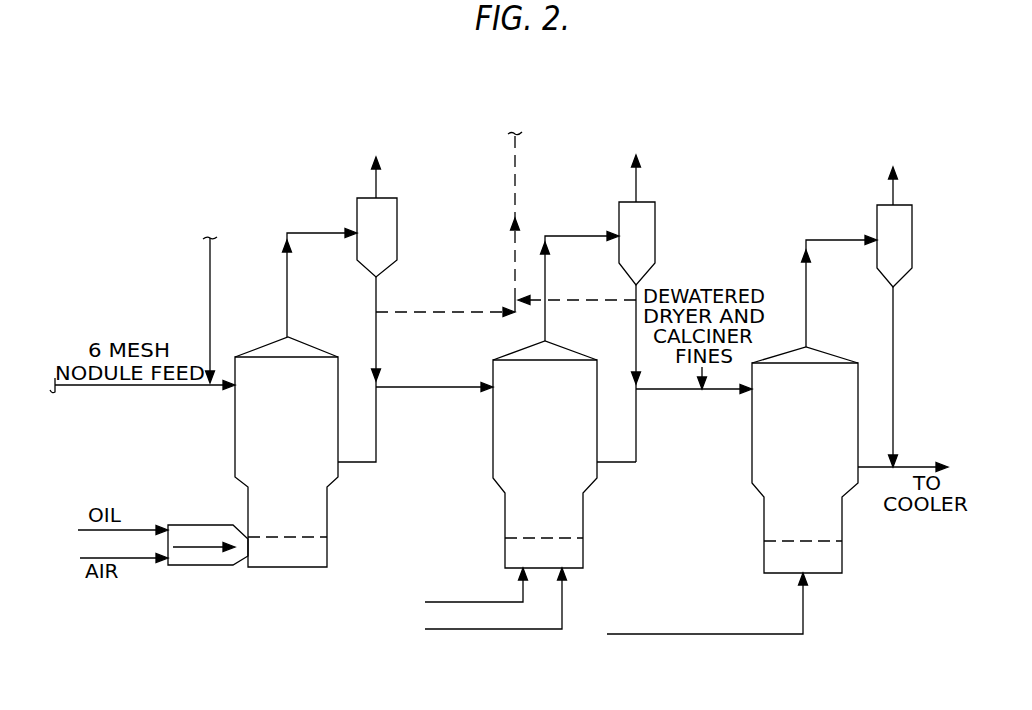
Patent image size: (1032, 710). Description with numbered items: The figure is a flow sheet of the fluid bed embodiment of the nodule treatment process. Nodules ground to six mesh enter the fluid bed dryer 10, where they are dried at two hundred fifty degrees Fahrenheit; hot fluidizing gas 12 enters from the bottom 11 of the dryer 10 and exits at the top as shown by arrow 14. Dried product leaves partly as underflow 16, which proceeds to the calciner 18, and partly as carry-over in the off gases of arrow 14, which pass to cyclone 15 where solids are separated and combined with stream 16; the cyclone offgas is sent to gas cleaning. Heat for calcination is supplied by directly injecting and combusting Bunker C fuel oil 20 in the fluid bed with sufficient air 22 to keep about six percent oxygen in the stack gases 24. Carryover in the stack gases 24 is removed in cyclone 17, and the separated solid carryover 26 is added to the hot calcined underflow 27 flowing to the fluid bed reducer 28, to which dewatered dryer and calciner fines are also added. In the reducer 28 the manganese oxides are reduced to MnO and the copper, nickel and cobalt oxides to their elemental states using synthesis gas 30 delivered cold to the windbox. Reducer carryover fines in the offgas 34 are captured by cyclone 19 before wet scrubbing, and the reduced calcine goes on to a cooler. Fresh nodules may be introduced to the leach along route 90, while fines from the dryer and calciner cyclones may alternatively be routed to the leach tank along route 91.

The fluid bed dryer 10 is at (218, 429).
The bottom of dryer 11 is at (209, 525).
The hot fluidizing gas 12 is at (194, 548).
The dryer off gas arrow 14 is at (287, 318).
The dryer cyclone 15 is at (397, 230).
The dryer underflow 16 is at (355, 463).
The calciner cyclone 17 is at (655, 233).
The calciner 18 is at (493, 452).
The reducer cyclone 19 is at (912, 226).
The Bunker C fuel oil 20 is at (435, 601).
The air 22 is at (440, 631).
The stack gases 24 is at (546, 292).
The separated solid carryover 26 is at (635, 351).
The hot calcined underflow 27 is at (637, 438).
The fluid bed reducer 28 is at (858, 420).
The synthesis gas 30 is at (690, 636).
The reducer offgas 34 is at (806, 295).
The fresh nodule route 90 is at (211, 292).
The fines route 91 is at (516, 200).